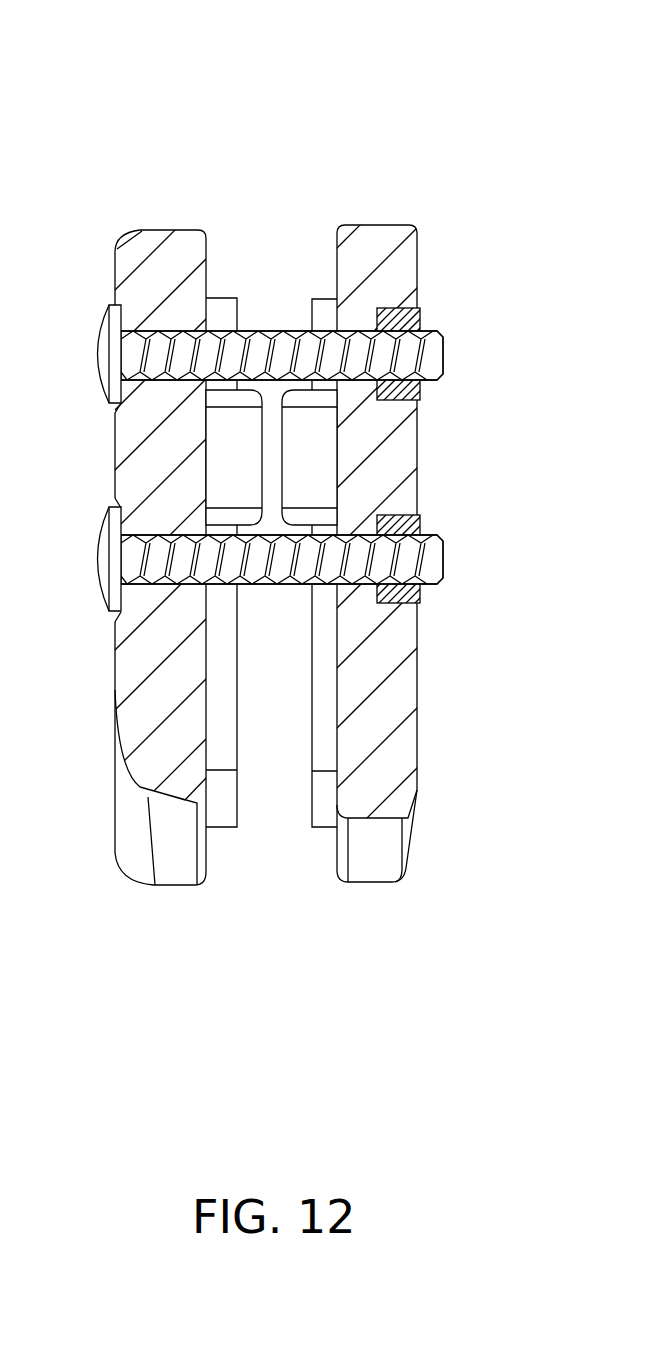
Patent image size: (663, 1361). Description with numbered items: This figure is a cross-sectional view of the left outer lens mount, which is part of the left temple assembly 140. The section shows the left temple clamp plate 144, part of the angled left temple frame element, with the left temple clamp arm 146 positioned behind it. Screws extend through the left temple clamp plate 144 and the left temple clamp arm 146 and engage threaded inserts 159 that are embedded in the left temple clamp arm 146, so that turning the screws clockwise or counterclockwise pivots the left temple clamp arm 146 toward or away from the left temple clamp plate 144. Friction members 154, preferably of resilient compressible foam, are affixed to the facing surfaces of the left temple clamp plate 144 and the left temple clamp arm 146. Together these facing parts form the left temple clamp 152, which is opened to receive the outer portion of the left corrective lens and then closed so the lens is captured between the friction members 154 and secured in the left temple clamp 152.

The left temple assembly 140 is at (458, 88).
The left temple clamp plate 144 is at (115, 245).
The left temple clamp arm 146 is at (418, 260).
The left temple clamp 152 is at (269, 258).
The friction member 154 is at (218, 827).
The threaded insert 159 is at (420, 312).